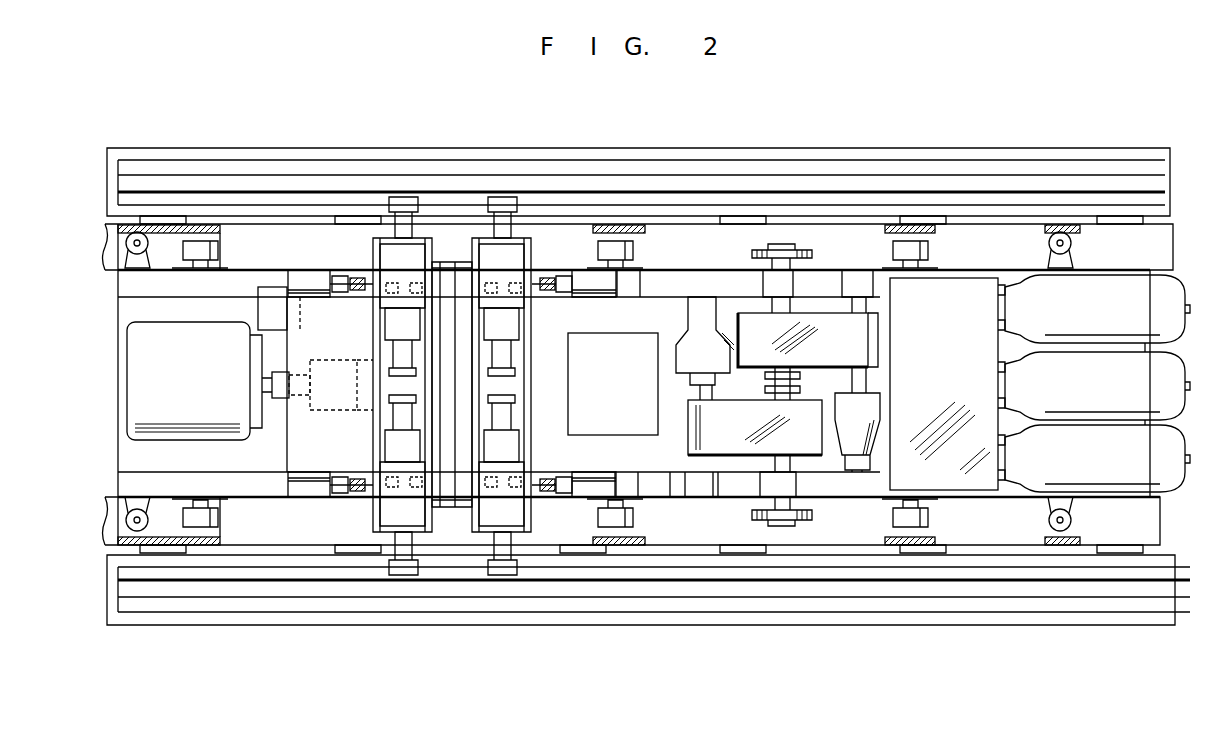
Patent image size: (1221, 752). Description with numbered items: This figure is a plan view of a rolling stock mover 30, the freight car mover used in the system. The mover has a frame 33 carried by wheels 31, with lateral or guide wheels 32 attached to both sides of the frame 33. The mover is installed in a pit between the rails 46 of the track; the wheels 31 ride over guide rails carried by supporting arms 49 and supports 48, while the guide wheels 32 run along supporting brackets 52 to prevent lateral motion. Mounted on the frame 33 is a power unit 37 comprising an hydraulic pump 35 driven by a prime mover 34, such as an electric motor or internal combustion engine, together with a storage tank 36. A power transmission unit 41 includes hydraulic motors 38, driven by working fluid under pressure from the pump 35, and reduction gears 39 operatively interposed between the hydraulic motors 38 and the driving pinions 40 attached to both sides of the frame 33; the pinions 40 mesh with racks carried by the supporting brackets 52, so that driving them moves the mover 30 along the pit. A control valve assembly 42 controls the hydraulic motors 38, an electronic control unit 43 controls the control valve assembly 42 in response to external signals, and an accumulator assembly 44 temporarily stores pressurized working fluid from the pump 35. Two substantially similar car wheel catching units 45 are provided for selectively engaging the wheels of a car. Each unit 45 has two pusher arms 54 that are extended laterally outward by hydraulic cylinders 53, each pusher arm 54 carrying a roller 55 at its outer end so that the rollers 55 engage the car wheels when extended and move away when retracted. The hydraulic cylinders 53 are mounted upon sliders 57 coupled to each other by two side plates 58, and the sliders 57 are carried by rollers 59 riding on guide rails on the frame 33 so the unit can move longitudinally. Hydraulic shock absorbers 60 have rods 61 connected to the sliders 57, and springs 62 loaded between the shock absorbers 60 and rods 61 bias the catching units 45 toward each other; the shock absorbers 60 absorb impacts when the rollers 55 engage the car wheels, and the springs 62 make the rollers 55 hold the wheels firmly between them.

The rolling stock mover 30 is at (998, 122).
The wheels 31 is at (218, 251).
The lateral or guide wheels 32 is at (145, 248).
The frame 33 is at (283, 270).
The prime mover 34 is at (195, 340).
The hydraulic pump 35 is at (320, 408).
The storage tank 36 is at (287, 454).
The power unit 37 is at (284, 372).
The hydraulic motors 38 is at (688, 315).
The reduction gears 39 is at (755, 367).
The driving pinions 40 is at (806, 252).
The power transmission unit 41 is at (878, 338).
The control valve assembly 42 is at (950, 397).
The electronic control unit 43 is at (620, 397).
The accumulator assembly 44 is at (1176, 288).
The car wheel catching units 45 is at (452, 387).
The rails 46 is at (317, 160).
The supports 48 is at (824, 160).
The supporting arms 49 is at (354, 218).
The supporting brackets 52 is at (102, 384).
The hydraulic cylinders 53 is at (385, 326).
The pusher arms 54 is at (432, 262).
The rollers 55 is at (403, 200).
The sliders 57 is at (373, 252).
The side plates 58 is at (373, 378).
The rollers 59 is at (414, 283).
The hydraulic shock absorbers 60 is at (316, 270).
The rods 61 is at (343, 297).
The springs 62 is at (354, 293).